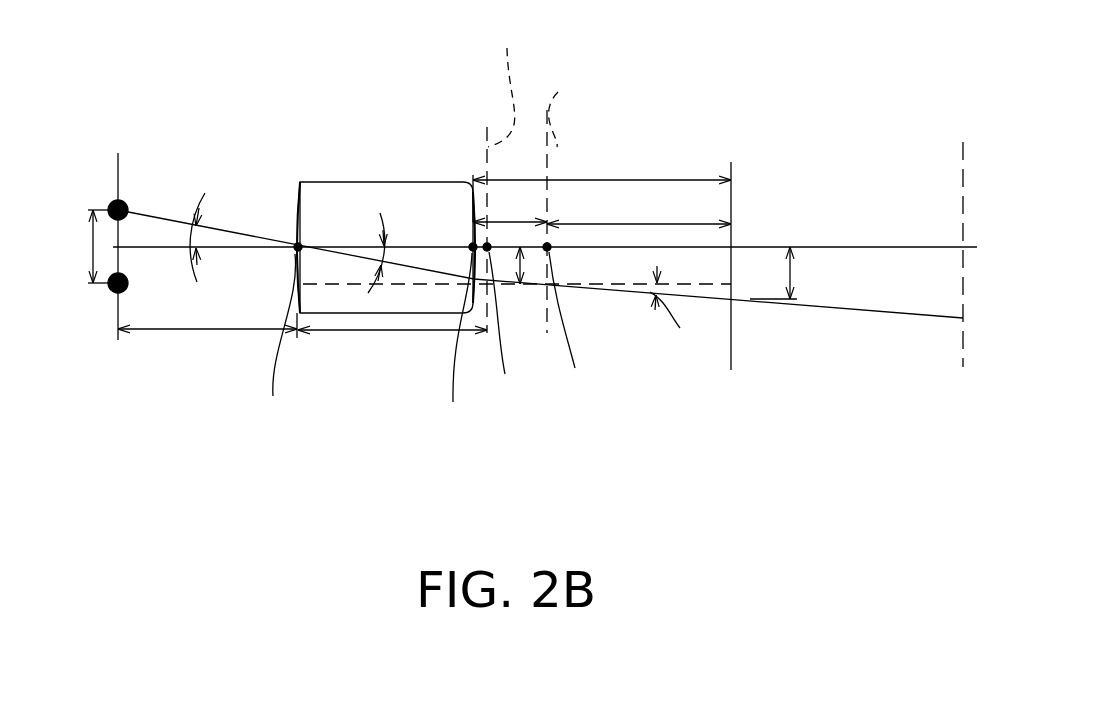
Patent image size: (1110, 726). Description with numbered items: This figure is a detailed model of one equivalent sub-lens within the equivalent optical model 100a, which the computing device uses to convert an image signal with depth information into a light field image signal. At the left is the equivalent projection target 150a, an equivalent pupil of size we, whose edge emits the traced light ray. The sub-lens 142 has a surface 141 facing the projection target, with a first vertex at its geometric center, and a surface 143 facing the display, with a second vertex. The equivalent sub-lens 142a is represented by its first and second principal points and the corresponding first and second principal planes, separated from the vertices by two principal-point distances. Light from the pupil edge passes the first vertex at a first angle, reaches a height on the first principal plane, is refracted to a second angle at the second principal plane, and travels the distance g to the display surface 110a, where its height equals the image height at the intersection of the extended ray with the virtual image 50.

The equivalent optical model 100a is at (513, 250).
The surface 141 is at (293, 214).
The sub-lens 142 is at (357, 212).
The equivalent sub-lens 142a is at (525, 138).
The surface 143 is at (473, 212).
The equivalent projection target 150a is at (119, 228).
The display surface 110a is at (731, 210).
The virtual image 50 is at (962, 167).